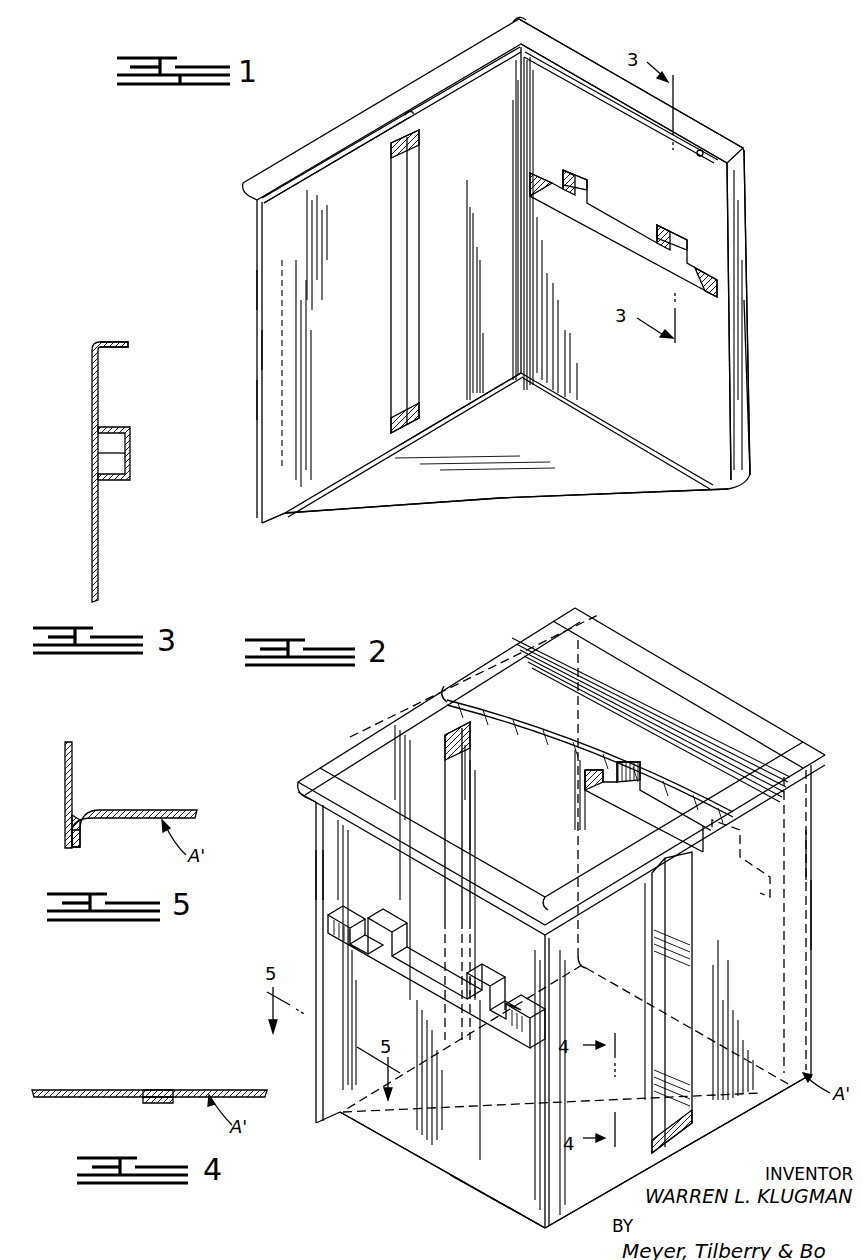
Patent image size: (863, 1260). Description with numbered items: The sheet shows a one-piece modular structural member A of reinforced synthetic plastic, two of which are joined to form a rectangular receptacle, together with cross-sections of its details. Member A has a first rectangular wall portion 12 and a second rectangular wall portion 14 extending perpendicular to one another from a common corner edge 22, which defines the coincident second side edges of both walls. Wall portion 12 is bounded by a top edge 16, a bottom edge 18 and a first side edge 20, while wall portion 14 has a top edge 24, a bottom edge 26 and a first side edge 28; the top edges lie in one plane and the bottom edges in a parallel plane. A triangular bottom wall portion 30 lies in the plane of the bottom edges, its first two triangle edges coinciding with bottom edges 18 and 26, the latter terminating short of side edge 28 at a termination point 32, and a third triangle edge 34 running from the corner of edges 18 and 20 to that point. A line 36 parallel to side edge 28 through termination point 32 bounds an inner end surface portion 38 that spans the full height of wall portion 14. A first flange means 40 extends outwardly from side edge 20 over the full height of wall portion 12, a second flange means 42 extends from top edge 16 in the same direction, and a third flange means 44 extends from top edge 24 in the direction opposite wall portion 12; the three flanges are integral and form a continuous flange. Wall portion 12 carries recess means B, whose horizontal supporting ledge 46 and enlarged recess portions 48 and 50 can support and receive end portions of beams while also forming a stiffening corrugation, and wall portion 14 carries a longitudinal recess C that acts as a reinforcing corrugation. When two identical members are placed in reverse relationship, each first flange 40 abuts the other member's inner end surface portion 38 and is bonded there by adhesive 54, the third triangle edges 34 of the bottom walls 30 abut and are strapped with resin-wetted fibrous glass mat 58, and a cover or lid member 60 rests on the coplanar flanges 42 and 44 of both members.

In FIG. 1, the first rectangular wall portion 12 is at (565, 87).
In FIG. 3, the first rectangular wall portion 12 is at (92, 390).
In FIG. 5, the first rectangular wall portion 12 is at (152, 810).
In FIG. 2, the first rectangular wall portion 12 is at (673, 700).
In FIG. 1, the second rectangular wall portion 14 is at (353, 163).
In FIG. 5, the second rectangular wall portion 14 is at (65, 792).
In FIG. 2, the second rectangular wall portion 14 is at (373, 783).
In FIG. 1, the top edge 16 is at (703, 155).
In FIG. 1, the bottom edge 18 is at (590, 415).
In FIG. 2, the bottom edge 18 is at (473, 1190).
In FIG. 1, the first side edge 20 is at (727, 222).
In FIG. 1, the common corner edge 22 is at (530, 47).
In FIG. 1, the top edge 24 is at (410, 113).
In FIG. 1, the bottom edge 26 is at (438, 425).
In FIG. 2, the bottom edge 26 is at (693, 1150).
In FIG. 1, the first side edge 28 is at (260, 282).
In FIG. 2, the first side edge 28 is at (316, 877).
In FIG. 1, the triangular bottom wall portion 30 is at (527, 483).
In FIG. 4, the triangular bottom wall portion 30 is at (118, 1090).
In FIG. 2, the triangular bottom wall portion 30 is at (415, 1135).
In FIG. 1, the termination point 32 is at (287, 517).
In FIG. 1, the third triangle edge 34 is at (553, 500).
In FIG. 4, the third triangle edge 34 is at (155, 1095).
In FIG. 2, the third triangle edge 34 is at (507, 1107).
In FIG. 1, the line 36 is at (282, 347).
In FIG. 1, the inner end surface portion 38 is at (272, 392).
In FIG. 1, the first flange means 40 is at (740, 340).
In FIG. 5, the first flange means 40 is at (82, 840).
In FIG. 2, the first flange means 40 is at (330, 873).
In FIG. 1, the second flange means 42 is at (693, 130).
In FIG. 3, the second flange means 42 is at (112, 342).
In FIG. 2, the second flange means 42 is at (623, 653).
In FIG. 1, the third flange means 44 is at (462, 62).
In FIG. 2, the third flange means 44 is at (383, 740).
In FIG. 1, the horizontal supporting ledge 46 is at (610, 227).
In FIG. 3, the horizontal supporting ledge 46 is at (98, 464).
In FIG. 1, the enlarged recess portion 48 is at (673, 247).
In FIG. 3, the enlarged recess portion 48 is at (110, 440).
In FIG. 1, the enlarged recess portion 50 is at (572, 175).
In FIG. 5, the adhesive 54 is at (78, 815).
In FIG. 4, the fibrous glass mat 58 is at (143, 1100).
In FIG. 2, the cover or lid member 60 is at (720, 727).
In FIG. 1, the modular structural member A is at (668, 64).
In FIG. 5, the modular structural member A is at (62, 760).
In FIG. 4, the modular structural member A is at (74, 1089).
In FIG. 2, the modular structural member A is at (420, 697).
In FIG. 1, the recess means B is at (623, 219).
In FIG. 3, the recess means B is at (86, 442).
In FIG. 2, the recess means B is at (634, 801).
In FIG. 1, the longitudinal recess C is at (398, 295).
In FIG. 2, the longitudinal recess C is at (472, 778).